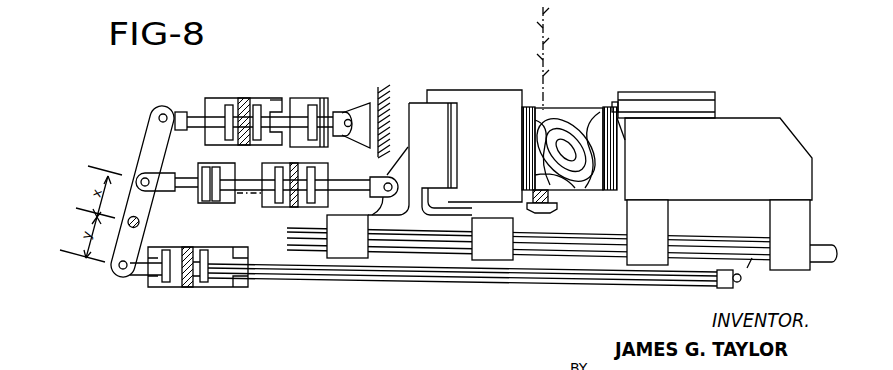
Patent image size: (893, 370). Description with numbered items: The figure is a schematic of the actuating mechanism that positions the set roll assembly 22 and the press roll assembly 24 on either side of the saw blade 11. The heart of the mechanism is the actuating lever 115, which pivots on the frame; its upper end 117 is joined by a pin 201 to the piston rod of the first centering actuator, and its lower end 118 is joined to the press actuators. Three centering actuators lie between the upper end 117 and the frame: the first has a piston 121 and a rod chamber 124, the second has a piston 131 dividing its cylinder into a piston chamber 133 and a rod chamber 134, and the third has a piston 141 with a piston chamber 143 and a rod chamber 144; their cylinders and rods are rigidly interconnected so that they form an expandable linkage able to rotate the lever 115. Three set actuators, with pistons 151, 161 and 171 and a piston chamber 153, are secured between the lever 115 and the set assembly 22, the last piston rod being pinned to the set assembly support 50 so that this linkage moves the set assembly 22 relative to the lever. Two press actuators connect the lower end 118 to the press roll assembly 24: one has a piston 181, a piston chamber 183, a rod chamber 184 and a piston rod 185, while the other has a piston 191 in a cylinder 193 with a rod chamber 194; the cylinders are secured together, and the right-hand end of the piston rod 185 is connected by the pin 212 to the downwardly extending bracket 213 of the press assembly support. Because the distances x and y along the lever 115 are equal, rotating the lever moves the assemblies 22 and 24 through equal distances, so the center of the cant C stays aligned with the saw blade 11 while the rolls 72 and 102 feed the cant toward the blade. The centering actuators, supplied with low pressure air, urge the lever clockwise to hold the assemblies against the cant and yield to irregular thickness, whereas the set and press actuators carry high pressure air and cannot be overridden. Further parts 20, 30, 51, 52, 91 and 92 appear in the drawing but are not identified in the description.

The saw blade 11 is at (547, 36).
The clamp foot 20 is at (551, 203).
The set roll assembly 22 is at (495, 80).
The press roll assembly 24 is at (675, 86).
The lower guide rail 30 is at (534, 252).
The set assembly support 50 is at (443, 138).
The slide block 51 is at (350, 258).
The slide block 52 is at (490, 260).
The roll 72 is at (527, 105).
The support block 91 is at (647, 262).
The support block 92 is at (800, 270).
The roll 102 is at (608, 105).
The actuating lever 115 is at (147, 147).
The upper end of the actuating lever 117 is at (161, 110).
The lower end of the actuating lever 118 is at (112, 266).
The piston 121 is at (228, 100).
The rod chamber 124 is at (212, 91).
The piston 131 is at (257, 100).
The piston chamber 133 is at (250, 97).
The rod chamber 134 is at (270, 100).
The piston 141 is at (315, 100).
The piston chamber 143 is at (326, 100).
The rod chamber 144 is at (303, 100).
The piston 151 is at (217, 203).
The piston chamber 153 is at (206, 203).
The piston 161 is at (280, 207).
The piston 171 is at (322, 169).
The piston 181 is at (204, 287).
The piston chamber 183 is at (197, 287).
The rod chamber 184 is at (228, 285).
The piston rod 185 is at (403, 277).
The piston 191 is at (165, 287).
The cylinder 193 is at (155, 287).
The rod chamber 194 is at (177, 287).
The pin 201 is at (157, 114).
The pin 212 is at (741, 280).
The downwardly extending bracket 213 is at (747, 268).
The workpiece C is at (573, 112).